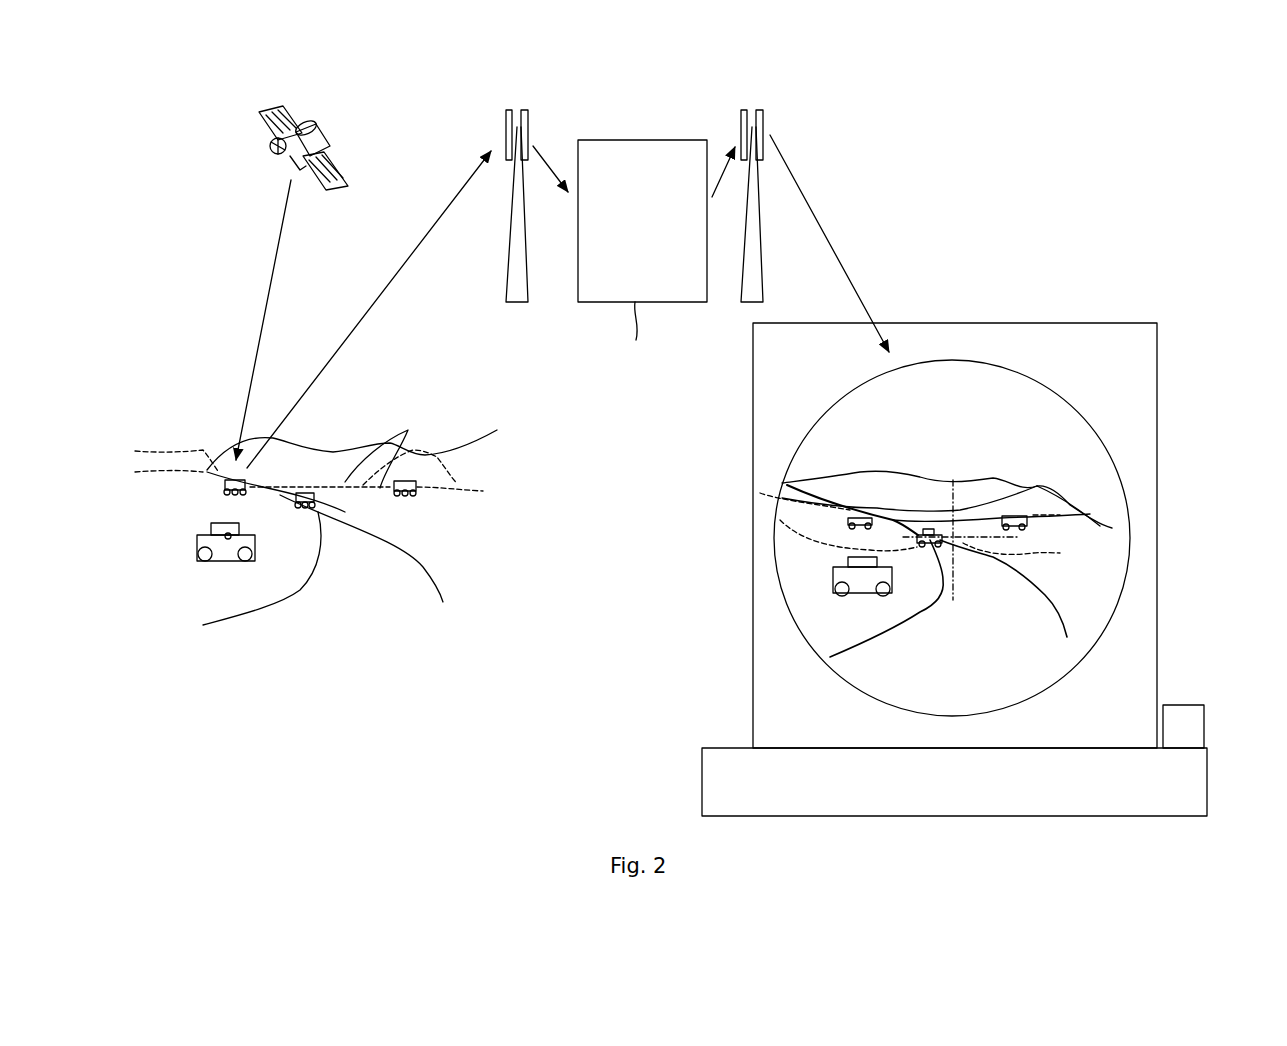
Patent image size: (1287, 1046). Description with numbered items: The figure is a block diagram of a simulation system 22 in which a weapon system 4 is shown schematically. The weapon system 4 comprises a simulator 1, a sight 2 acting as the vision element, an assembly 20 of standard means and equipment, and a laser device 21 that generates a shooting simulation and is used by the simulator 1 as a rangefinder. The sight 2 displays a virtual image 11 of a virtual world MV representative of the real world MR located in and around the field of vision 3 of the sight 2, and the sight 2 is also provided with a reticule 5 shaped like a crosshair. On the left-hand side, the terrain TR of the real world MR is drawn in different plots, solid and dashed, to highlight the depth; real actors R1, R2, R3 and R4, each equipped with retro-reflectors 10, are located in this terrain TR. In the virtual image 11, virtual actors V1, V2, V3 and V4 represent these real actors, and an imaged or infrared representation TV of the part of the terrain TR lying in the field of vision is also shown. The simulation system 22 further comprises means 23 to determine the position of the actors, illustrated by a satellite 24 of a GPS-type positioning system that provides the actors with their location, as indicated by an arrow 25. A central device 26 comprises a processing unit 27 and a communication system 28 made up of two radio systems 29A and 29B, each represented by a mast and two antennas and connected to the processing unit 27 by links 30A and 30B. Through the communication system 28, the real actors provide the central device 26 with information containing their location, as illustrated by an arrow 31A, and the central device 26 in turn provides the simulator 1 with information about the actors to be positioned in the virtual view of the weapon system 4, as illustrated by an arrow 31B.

The simulator 1 is at (1160, 375).
The sight 2 is at (956, 492).
The field of vision 3 is at (948, 410).
The weapon system 4 is at (953, 816).
The reticule 5 is at (1045, 552).
The retro-reflectors 10 is at (230, 497).
The virtual image 11 is at (986, 406).
The assembly of standard means and equipment 20 is at (702, 770).
The laser device 21 is at (1175, 705).
The simulation system 22 is at (1066, 131).
The means to determine the position of the actors 23 is at (281, 133).
The satellite 24 is at (270, 132).
The arrow 25 is at (266, 300).
The central device 26 is at (641, 130).
The processing unit 27 is at (641, 336).
The communication system 28 is at (675, 205).
The radio system 29A is at (511, 99).
The radio system 29B is at (780, 128).
The link 30A is at (533, 146).
The link 30B is at (712, 197).
The arrow 31A is at (372, 310).
The arrow 31B is at (833, 250).
The real world MR is at (140, 436).
The virtual world MV is at (1031, 441).
The real actor R1 is at (196, 546).
The real actor R2 is at (225, 484).
The real actor R3 is at (307, 488).
The real actor R4 is at (410, 480).
The terrain TR is at (381, 447).
The imaged representation of the terrain TV is at (847, 477).
The virtual actor V1 is at (833, 574).
The virtual actor V2 is at (848, 518).
The virtual actor V3 is at (917, 538).
The virtual actor V4 is at (1027, 514).